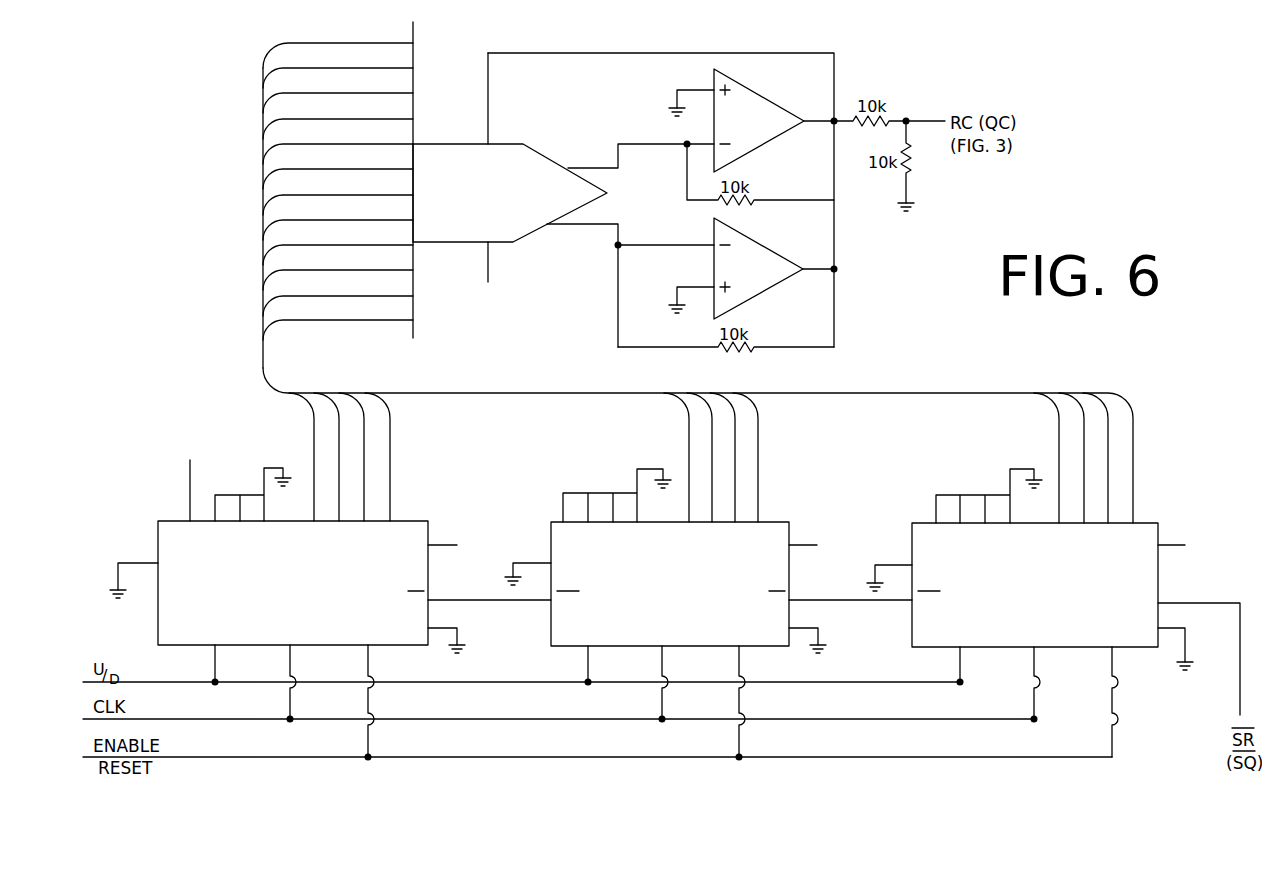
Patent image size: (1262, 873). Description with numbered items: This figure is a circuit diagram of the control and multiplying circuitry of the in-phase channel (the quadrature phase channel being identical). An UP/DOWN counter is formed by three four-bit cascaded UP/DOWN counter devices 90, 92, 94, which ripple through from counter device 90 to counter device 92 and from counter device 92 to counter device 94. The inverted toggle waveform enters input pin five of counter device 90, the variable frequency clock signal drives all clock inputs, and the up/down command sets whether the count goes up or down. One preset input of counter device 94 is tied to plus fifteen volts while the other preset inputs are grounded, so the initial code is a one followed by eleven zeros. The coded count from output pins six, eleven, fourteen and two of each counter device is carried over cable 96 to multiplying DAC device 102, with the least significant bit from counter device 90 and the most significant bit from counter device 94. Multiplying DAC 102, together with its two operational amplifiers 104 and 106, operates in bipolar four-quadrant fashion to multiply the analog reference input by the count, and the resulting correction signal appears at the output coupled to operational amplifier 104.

The counter device 90 is at (912, 624).
The counter device 92 is at (551, 623).
The counter device 94 is at (158, 627).
The cable 96 is at (263, 362).
The multiplying digital to analog (DAC) device 102 is at (440, 144).
The operational amplifier 104 is at (779, 78).
The operational amplifier 106 is at (782, 231).